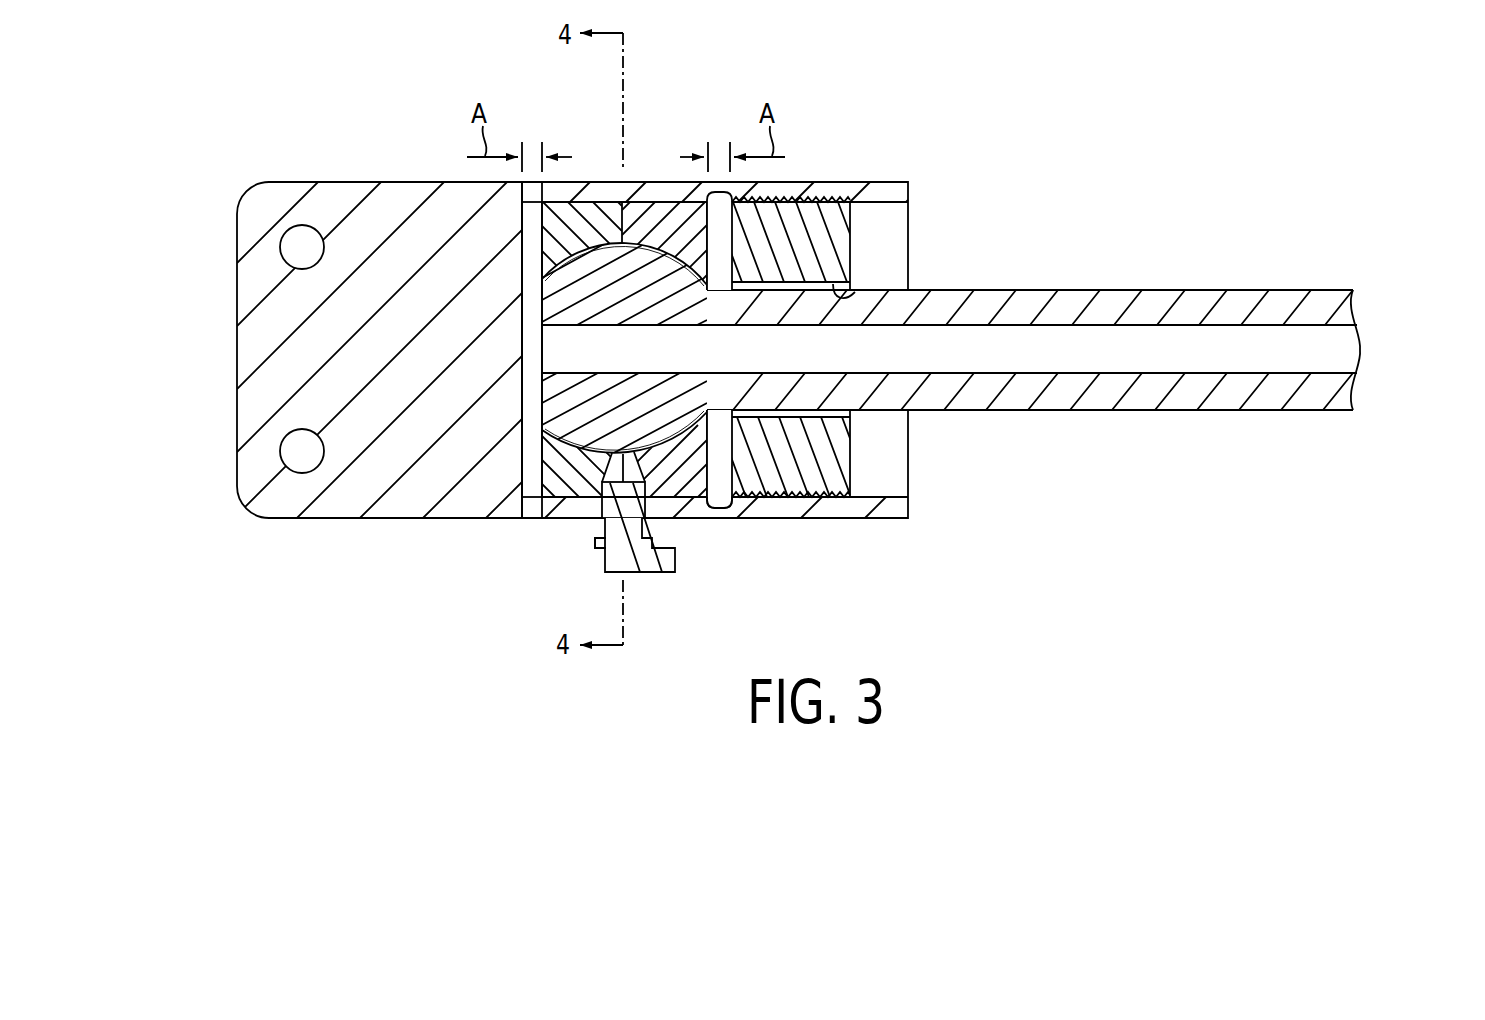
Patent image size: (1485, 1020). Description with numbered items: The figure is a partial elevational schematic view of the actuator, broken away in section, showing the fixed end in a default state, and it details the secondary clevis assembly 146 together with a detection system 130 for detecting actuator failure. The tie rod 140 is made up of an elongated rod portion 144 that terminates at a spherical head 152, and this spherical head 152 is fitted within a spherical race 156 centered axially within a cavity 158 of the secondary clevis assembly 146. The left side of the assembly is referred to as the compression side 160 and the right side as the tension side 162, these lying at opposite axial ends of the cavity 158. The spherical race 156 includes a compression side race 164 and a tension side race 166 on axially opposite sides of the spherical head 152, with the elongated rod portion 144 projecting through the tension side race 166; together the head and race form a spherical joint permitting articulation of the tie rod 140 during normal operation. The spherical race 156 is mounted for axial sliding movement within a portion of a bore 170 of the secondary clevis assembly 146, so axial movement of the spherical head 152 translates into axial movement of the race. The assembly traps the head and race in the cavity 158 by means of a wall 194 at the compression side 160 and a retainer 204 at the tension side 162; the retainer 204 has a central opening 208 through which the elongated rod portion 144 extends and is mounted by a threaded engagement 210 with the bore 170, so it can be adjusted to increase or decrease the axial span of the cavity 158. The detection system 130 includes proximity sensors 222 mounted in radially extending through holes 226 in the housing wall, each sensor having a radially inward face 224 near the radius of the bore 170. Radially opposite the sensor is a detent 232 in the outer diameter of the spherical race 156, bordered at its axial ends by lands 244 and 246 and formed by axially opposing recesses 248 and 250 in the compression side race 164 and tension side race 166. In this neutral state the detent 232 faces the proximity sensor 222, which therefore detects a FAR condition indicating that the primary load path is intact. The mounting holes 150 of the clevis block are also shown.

The detection system 130 is at (468, 572).
The tie rod 140 is at (1057, 418).
The elongated rod portion 144 is at (1285, 296).
The secondary clevis assembly 146 is at (252, 185).
The mounting holes 150 is at (297, 260).
The spherical head 152 is at (657, 258).
The spherical race 156 is at (594, 188).
The cavity 158 is at (527, 280).
The compression side 160 is at (200, 433).
The tension side 162 is at (975, 434).
The compression side race 164 is at (580, 205).
The tension side race 166 is at (637, 215).
The bore 170 is at (858, 203).
The wall 194 is at (526, 404).
The retainer 204 is at (840, 233).
The central opening 208 is at (863, 291).
The threaded engagement 210 is at (798, 193).
The proximity sensor 222 is at (641, 580).
The face 224 is at (652, 497).
The through hole 226 is at (618, 548).
The detent 232 is at (612, 486).
The land 244 is at (640, 484).
The land 246 is at (672, 487).
The recess 248 is at (548, 463).
The recess 250 is at (680, 490).